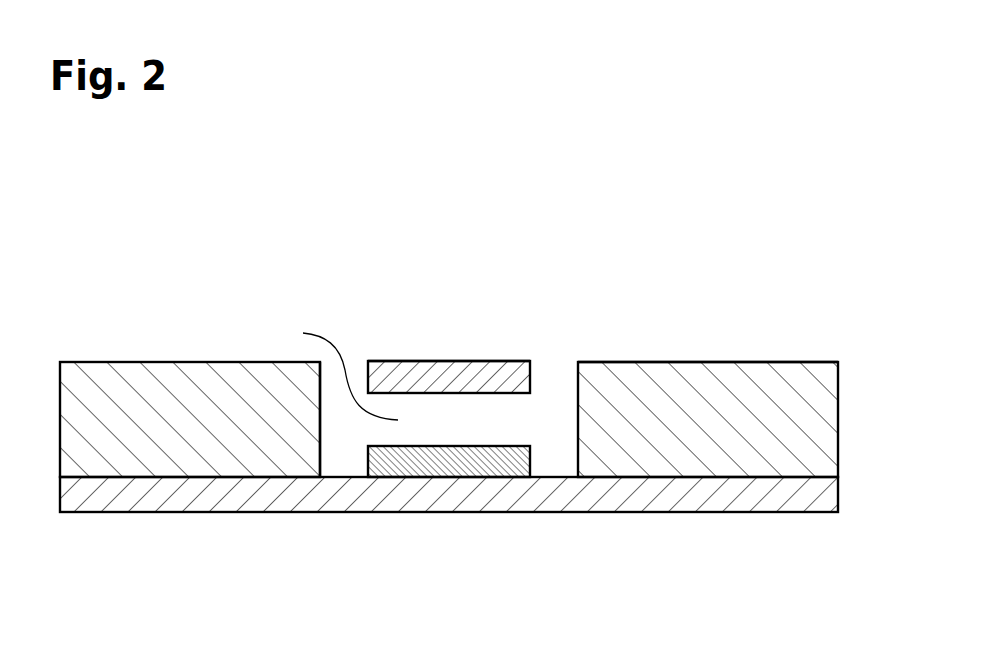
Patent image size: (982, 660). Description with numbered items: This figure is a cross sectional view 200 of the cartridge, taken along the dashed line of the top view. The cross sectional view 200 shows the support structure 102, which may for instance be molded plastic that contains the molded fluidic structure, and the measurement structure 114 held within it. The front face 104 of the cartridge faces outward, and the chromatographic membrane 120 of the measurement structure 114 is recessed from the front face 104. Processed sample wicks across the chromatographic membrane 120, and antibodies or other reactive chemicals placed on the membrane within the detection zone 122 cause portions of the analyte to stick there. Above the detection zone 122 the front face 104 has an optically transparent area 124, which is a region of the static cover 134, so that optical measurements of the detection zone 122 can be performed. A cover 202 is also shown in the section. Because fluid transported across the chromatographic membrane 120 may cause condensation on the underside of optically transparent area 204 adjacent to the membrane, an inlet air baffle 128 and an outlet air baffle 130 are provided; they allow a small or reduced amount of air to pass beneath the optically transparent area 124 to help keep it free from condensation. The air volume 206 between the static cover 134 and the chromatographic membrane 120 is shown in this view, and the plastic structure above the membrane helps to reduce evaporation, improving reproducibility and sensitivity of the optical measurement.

The cross sectional view 200 is at (106, 296).
The support structure 102 is at (174, 385).
The front face 104 is at (531, 375).
The measurement structure 114 is at (310, 391).
The chromatographic membrane 120 is at (397, 463).
The detection zone 122 is at (505, 465).
The optically transparent area 124 is at (495, 350).
The inlet air baffle 128 is at (489, 417).
The outlet air baffle 130 is at (282, 333).
The static cover 134 is at (449, 373).
The cover 202 is at (725, 493).
The underside of optically transparent area 204 is at (448, 400).
The air volume 206 is at (398, 429).